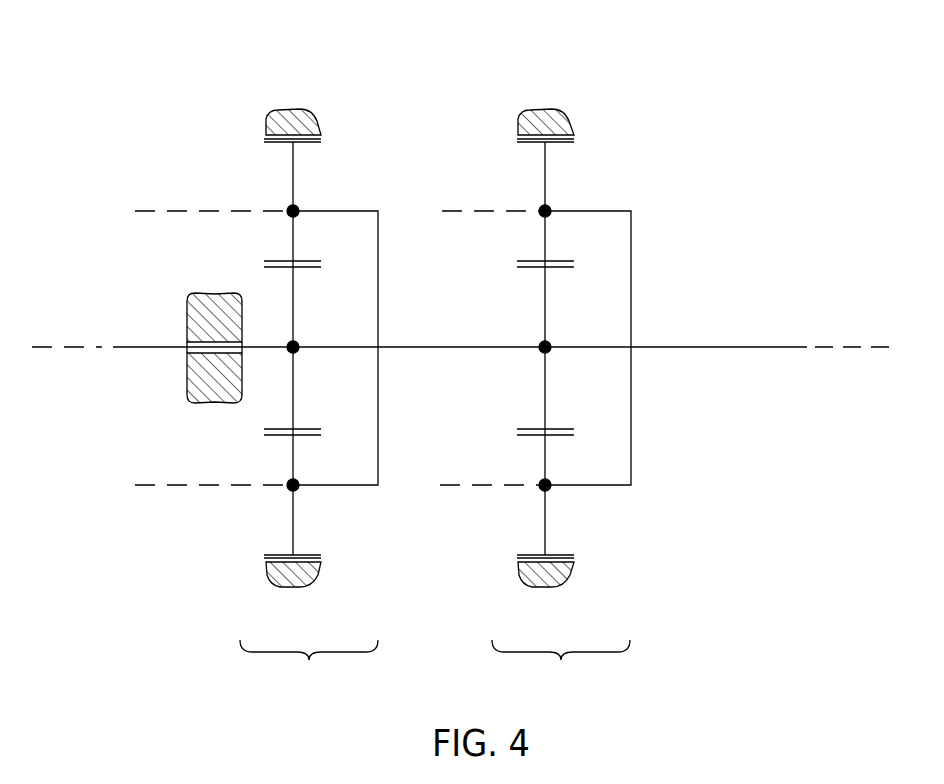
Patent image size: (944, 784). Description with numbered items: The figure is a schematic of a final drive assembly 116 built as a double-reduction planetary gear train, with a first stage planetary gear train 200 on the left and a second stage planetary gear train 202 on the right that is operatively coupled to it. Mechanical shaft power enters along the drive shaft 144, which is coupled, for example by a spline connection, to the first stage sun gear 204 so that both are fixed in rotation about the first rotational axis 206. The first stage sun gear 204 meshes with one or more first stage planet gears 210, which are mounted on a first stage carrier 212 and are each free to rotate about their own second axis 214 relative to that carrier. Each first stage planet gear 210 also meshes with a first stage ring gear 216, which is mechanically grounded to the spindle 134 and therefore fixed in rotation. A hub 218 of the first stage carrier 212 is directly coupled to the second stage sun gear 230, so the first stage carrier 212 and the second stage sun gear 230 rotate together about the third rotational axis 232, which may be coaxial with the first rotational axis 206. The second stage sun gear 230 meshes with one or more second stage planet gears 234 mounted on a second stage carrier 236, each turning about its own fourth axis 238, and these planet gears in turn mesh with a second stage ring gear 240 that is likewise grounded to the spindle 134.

The final drive assembly 116 is at (669, 61).
The spindle 134 is at (292, 108).
The drive shaft 144 is at (148, 350).
The first stage planetary gear train 200 is at (309, 668).
The second stage planetary gear train 202 is at (561, 668).
The first stage sun gear 204 is at (293, 392).
The first rotational axis 206 is at (70, 350).
The first stage planet gears 210 is at (293, 173).
The first stage carrier 212 is at (333, 210).
The second axis 214 is at (173, 213).
The first stage ring gear 216 is at (322, 132).
The hub 218 is at (460, 345).
The second stage sun gear 230 is at (545, 390).
The third rotational axis 232 is at (852, 350).
The second stage planet gears 234 is at (545, 168).
The second stage carrier 236 is at (631, 247).
The fourth axis 238 is at (480, 213).
The second stage ring gear 240 is at (577, 132).